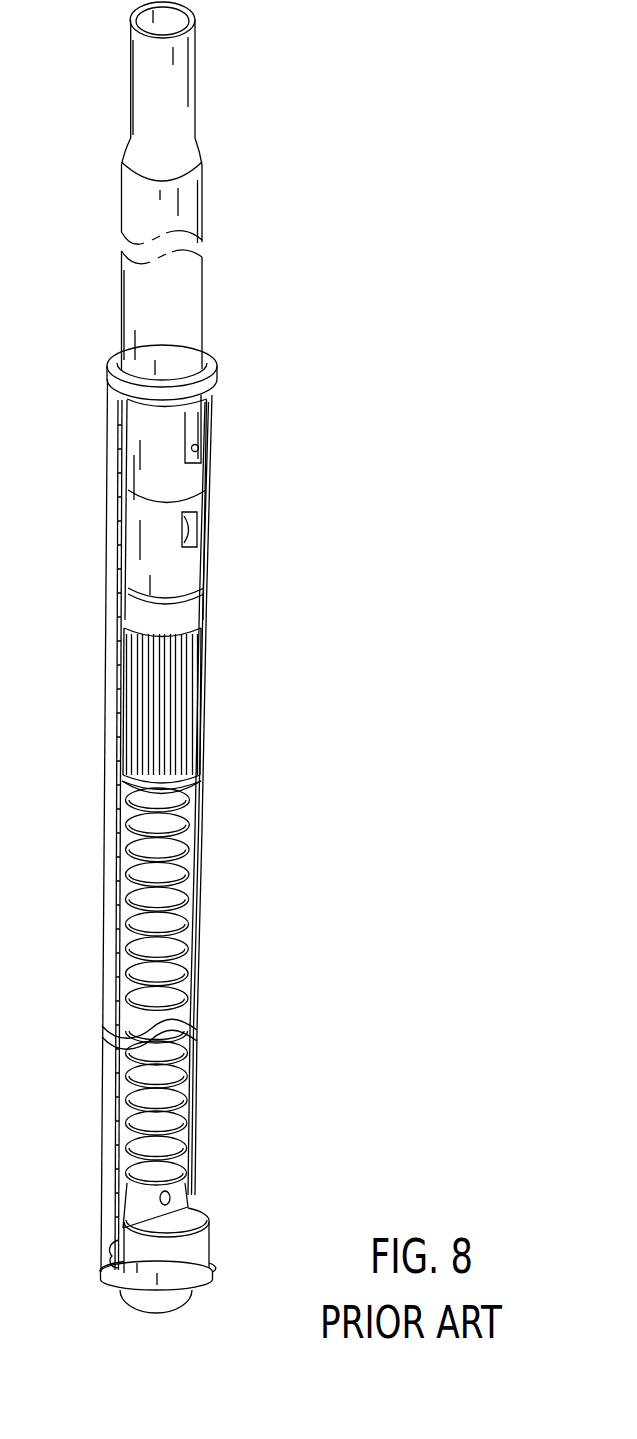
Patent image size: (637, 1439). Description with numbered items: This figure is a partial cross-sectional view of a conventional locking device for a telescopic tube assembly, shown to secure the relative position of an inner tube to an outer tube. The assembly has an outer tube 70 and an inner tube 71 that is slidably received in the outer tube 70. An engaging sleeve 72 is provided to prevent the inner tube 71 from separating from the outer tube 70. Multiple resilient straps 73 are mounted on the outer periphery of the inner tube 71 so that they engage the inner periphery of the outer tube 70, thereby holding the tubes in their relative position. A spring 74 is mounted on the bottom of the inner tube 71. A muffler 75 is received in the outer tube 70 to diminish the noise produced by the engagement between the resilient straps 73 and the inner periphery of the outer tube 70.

The outer tube 70 is at (107, 940).
The inner tube 71 is at (193, 202).
The engaging sleeve 72 is at (197, 437).
The resilient straps 73 is at (187, 693).
The spring 74 is at (187, 930).
The muffler 75 is at (170, 1102).